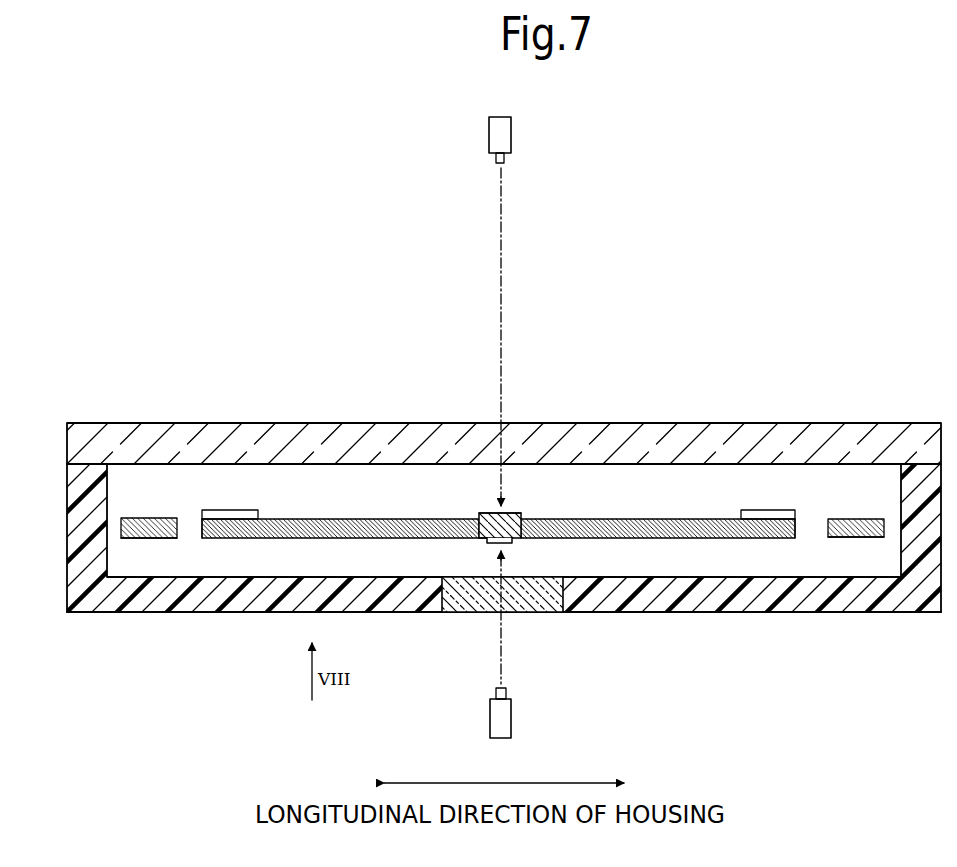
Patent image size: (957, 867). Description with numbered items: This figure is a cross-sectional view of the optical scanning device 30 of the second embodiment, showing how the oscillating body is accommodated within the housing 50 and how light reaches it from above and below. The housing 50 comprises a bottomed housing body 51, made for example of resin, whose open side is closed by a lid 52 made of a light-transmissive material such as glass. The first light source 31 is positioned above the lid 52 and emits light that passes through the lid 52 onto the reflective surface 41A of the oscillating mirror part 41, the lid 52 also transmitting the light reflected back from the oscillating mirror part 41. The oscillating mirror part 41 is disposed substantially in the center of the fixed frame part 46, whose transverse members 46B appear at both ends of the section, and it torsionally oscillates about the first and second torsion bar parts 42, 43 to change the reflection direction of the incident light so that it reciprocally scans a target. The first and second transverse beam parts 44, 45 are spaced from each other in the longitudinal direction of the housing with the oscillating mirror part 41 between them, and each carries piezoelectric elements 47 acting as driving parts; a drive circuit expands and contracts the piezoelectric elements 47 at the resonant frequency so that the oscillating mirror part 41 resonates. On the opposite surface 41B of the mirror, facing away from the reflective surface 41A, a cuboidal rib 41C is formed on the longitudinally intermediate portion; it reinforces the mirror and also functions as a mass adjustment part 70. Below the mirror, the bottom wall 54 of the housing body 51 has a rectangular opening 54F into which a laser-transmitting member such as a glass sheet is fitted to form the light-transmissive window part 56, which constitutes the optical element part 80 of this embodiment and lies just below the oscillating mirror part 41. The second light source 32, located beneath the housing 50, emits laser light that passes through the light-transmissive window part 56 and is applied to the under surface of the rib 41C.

The optical scanning device 30 is at (223, 317).
The first light source 31 is at (511, 133).
The second light source 32 is at (511, 716).
The oscillating mirror part 41 is at (481, 507).
The reflective surface 41A is at (511, 508).
The opposite surface 41B is at (487, 541).
The rib 41C is at (508, 544).
The mass adjustment part 70 is at (499, 540).
The first torsion bar part 42 is at (357, 519).
The second torsion bar part 43 is at (683, 519).
The first transverse beam part 44 is at (243, 538).
The second transverse beam part 45 is at (773, 537).
The fixed frame part 46 is at (161, 513).
The transverse member 46B is at (164, 539).
The piezoelectric element 47 is at (225, 510).
The housing 50 is at (109, 356).
The housing body 51 is at (70, 468).
The lid 52 is at (94, 423).
The bottom wall 54 is at (742, 613).
The rectangular opening 54F is at (450, 598).
The light-transmissive window part 56 is at (528, 600).
The optical element part 80 is at (502, 594).